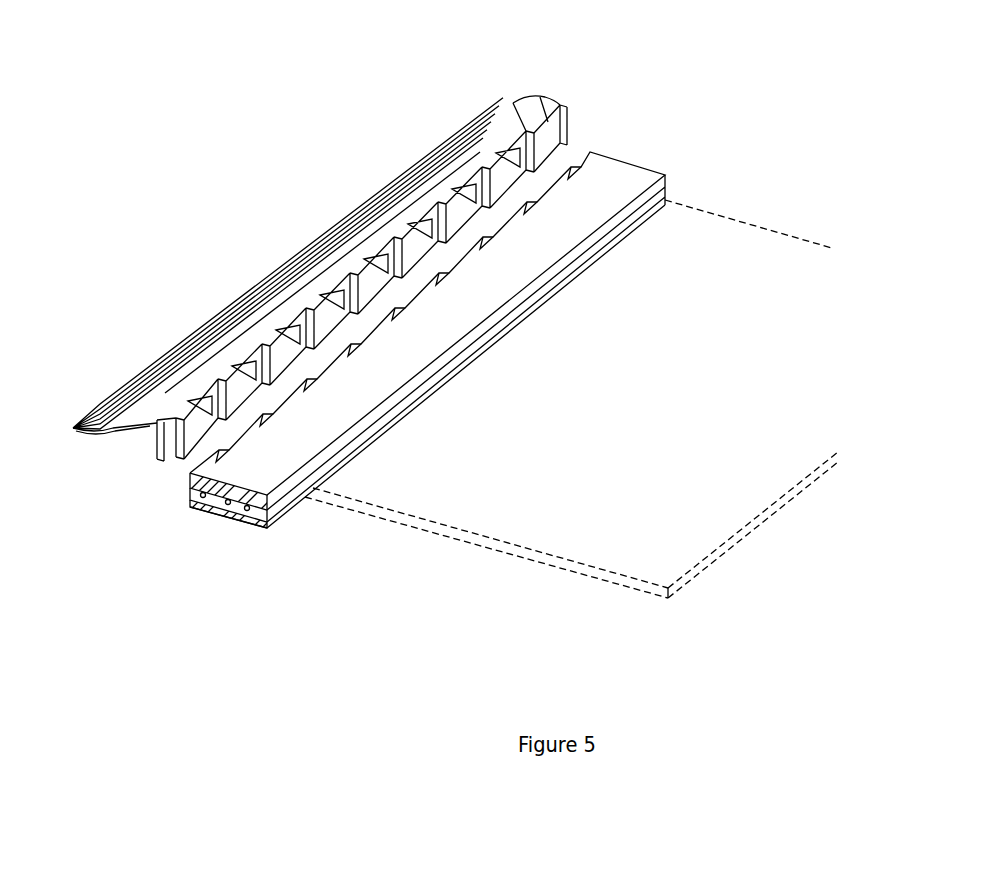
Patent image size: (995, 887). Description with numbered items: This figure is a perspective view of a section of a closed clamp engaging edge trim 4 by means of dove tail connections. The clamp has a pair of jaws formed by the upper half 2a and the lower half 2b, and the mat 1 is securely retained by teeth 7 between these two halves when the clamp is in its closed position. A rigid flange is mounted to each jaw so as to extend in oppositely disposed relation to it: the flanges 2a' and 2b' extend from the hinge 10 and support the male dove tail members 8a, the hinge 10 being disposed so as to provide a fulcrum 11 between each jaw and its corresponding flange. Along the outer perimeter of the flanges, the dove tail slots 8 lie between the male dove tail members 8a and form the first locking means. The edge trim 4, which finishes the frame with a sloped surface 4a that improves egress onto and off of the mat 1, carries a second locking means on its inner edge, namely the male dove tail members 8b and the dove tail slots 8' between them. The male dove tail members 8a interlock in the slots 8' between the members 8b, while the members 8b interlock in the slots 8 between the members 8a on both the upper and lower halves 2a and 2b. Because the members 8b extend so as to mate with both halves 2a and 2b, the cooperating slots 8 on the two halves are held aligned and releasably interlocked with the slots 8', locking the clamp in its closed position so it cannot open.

The mat 1 is at (756, 211).
The upper half of clamp 2a is at (427, 323).
The flange of upper half 2a' is at (171, 489).
The lower half of clamp 2b is at (466, 366).
The flange of lower half 2b' is at (187, 564).
The edge trim 4 is at (412, 108).
The sloped surface of edge trim 4a is at (100, 405).
The teeth 7 is at (227, 500).
The dove tail slots 8 is at (442, 246).
The dove tail slots of edge trim 8' is at (540, 89).
The male dove tail members 8a is at (578, 160).
The male dove tail members of edge trim 8b is at (555, 133).
The hinge 10 is at (192, 496).
The fulcrum 11 is at (205, 508).